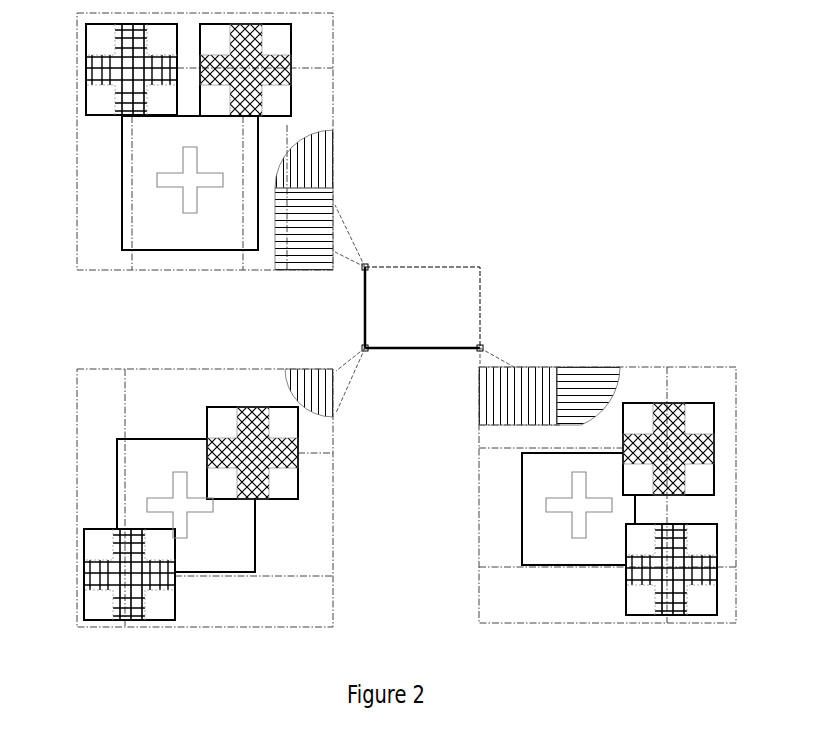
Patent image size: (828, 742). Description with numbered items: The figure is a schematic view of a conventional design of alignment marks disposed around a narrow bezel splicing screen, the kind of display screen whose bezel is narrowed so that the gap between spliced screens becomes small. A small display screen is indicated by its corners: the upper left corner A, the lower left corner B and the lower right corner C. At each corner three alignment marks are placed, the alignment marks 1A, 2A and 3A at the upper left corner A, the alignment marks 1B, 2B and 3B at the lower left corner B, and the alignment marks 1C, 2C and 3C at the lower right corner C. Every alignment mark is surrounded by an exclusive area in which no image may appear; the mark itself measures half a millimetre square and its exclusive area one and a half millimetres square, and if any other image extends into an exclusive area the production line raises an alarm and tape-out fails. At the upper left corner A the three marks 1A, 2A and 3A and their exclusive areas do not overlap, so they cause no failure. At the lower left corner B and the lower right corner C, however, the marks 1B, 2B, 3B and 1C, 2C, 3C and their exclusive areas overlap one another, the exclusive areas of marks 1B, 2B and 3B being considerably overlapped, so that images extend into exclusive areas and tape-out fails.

The alignment mark at the upper left corner 1A is at (115, 50).
The alignment mark at the upper left corner 2A is at (183, 202).
The alignment mark at the upper left corner 3A is at (263, 47).
The alignment mark at the lower left corner 1B is at (112, 547).
The alignment mark at the lower left corner 2B is at (167, 483).
The alignment mark at the lower left corner 3B is at (232, 423).
The alignment mark at the lower right corner 1C is at (628, 583).
The alignment mark at the lower right corner 2C is at (572, 493).
The alignment mark at the lower right corner 3C is at (670, 402).
The upper left corner A is at (367, 265).
The lower left corner B is at (363, 347).
The lower right corner C is at (483, 346).